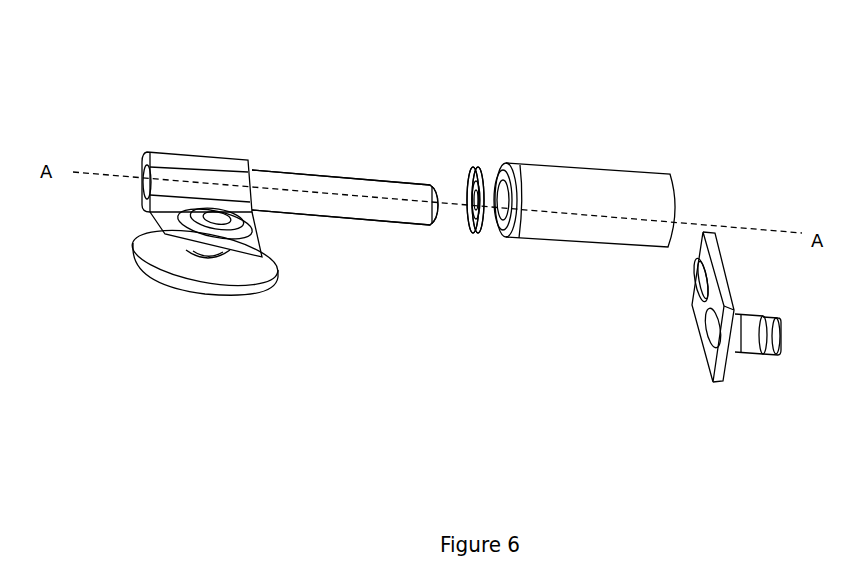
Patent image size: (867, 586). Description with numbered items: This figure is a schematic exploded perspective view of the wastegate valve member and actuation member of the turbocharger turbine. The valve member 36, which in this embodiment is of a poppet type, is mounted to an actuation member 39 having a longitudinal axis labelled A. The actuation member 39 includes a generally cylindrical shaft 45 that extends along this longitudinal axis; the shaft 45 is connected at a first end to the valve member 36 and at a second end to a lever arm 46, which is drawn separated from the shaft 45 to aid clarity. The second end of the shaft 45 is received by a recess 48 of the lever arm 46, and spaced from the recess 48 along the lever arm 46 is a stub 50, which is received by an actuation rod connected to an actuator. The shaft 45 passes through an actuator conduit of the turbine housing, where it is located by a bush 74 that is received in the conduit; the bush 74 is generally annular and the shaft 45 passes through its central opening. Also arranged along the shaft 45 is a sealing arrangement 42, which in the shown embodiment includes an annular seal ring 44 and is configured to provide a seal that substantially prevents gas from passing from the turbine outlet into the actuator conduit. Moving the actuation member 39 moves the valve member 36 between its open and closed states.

The valve member 36 is at (181, 270).
The actuation member 39 is at (345, 178).
The shaft 45 is at (372, 213).
The sealing arrangement 42 is at (477, 143).
The annular seal ring 44 is at (475, 233).
The bush 74 is at (588, 195).
The lever arm 46 is at (687, 345).
The recess 48 is at (702, 285).
The stub 50 is at (753, 339).